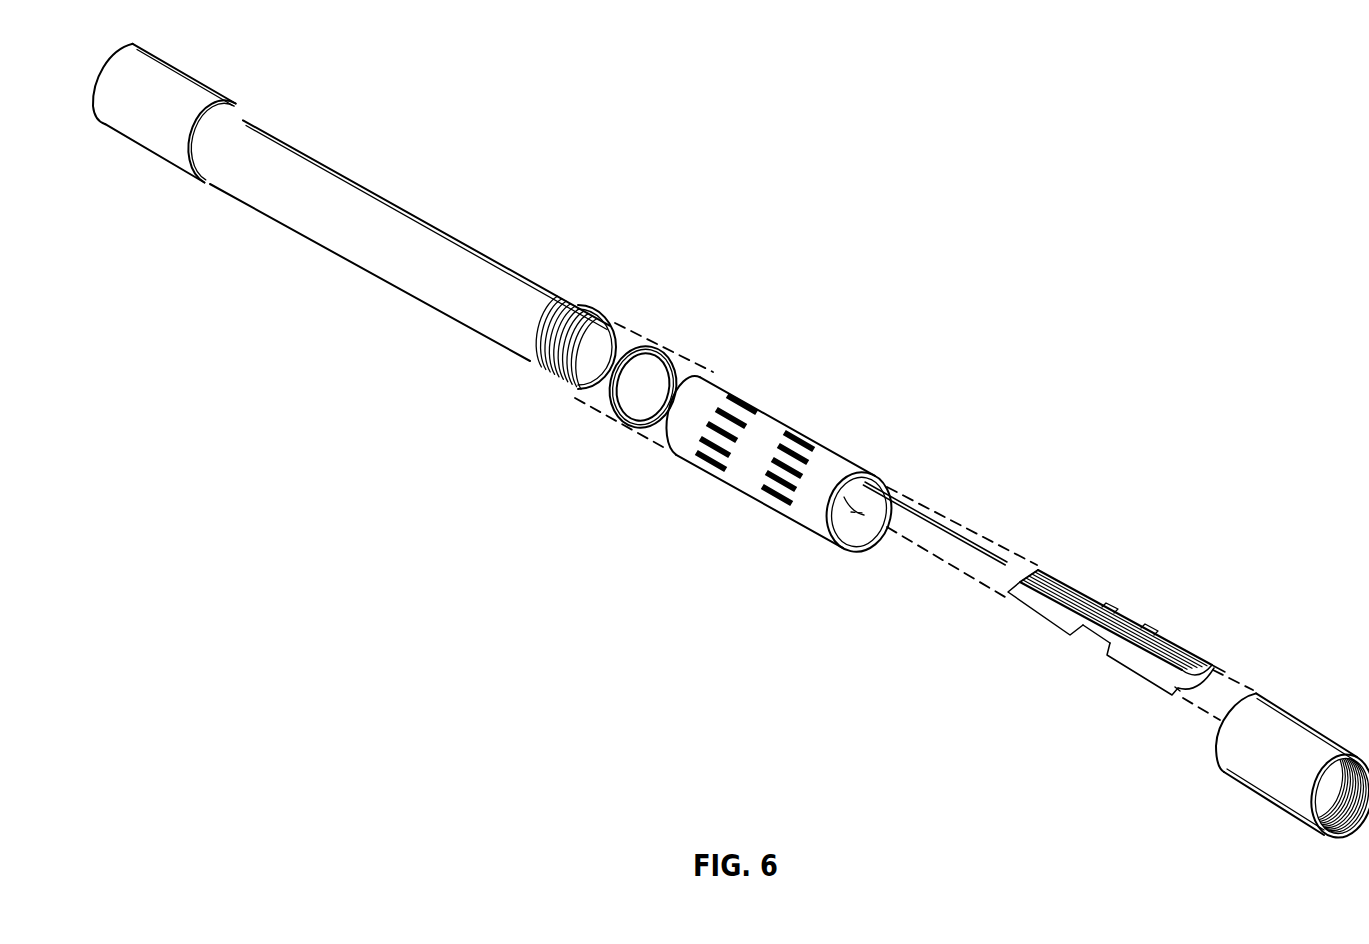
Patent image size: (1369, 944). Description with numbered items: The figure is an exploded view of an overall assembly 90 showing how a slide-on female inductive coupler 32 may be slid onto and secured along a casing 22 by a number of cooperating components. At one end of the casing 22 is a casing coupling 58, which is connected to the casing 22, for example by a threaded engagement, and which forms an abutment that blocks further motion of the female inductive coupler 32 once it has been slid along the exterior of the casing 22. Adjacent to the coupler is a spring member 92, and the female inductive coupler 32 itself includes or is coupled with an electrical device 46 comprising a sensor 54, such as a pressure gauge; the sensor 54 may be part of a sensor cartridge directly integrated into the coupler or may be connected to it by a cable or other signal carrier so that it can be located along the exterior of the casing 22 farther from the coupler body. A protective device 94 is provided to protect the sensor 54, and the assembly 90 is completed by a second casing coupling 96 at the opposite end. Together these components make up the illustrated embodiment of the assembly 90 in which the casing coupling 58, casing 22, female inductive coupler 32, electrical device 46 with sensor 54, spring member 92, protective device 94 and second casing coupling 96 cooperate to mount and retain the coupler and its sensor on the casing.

The casing 22 is at (406, 251).
The female inductive coupler 32 is at (789, 427).
The electrical device 46 is at (936, 513).
The sensor 54 is at (962, 527).
The casing coupling 58 is at (172, 120).
The assembly 90 is at (974, 372).
The spring member 92 is at (656, 348).
The protective device 94 is at (1097, 597).
The second casing coupling 96 is at (1291, 767).